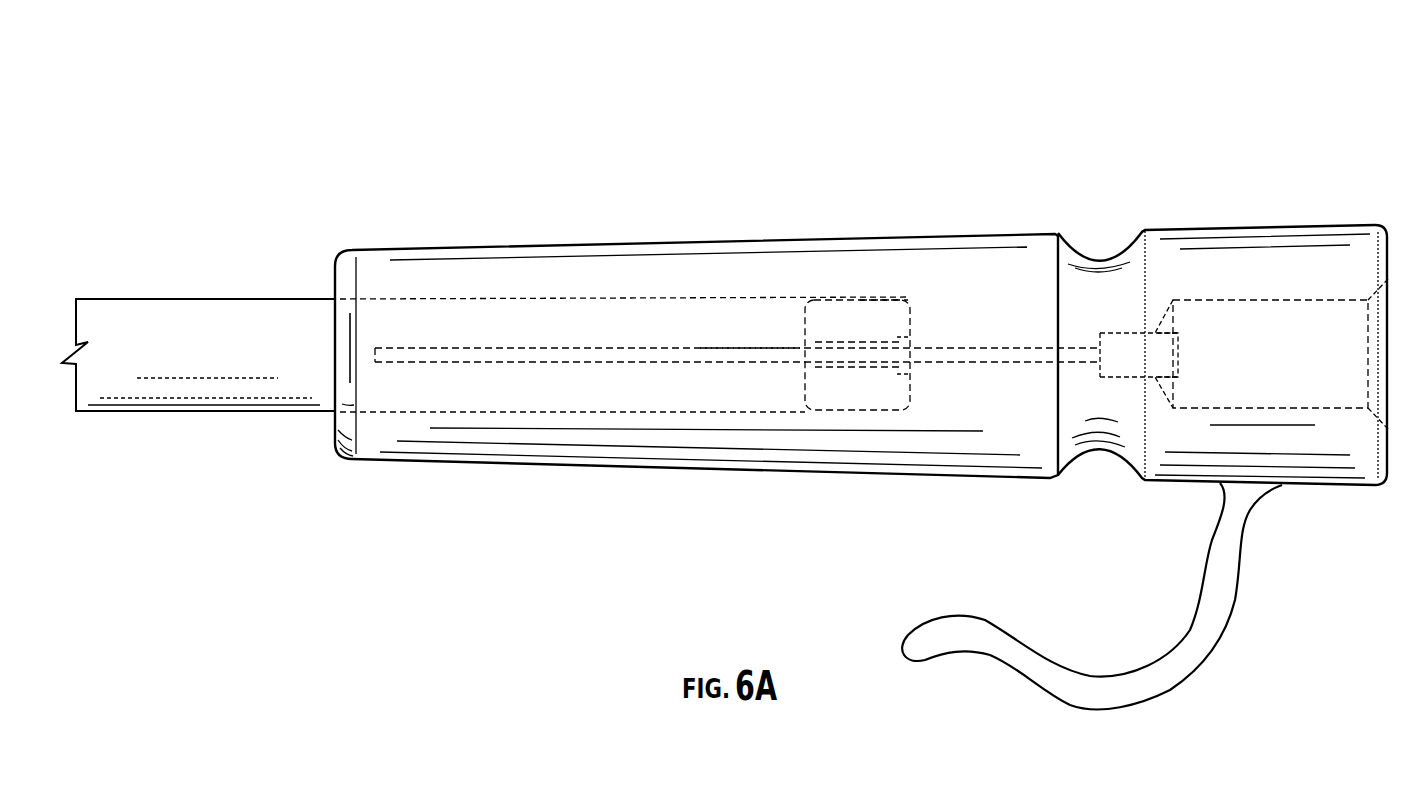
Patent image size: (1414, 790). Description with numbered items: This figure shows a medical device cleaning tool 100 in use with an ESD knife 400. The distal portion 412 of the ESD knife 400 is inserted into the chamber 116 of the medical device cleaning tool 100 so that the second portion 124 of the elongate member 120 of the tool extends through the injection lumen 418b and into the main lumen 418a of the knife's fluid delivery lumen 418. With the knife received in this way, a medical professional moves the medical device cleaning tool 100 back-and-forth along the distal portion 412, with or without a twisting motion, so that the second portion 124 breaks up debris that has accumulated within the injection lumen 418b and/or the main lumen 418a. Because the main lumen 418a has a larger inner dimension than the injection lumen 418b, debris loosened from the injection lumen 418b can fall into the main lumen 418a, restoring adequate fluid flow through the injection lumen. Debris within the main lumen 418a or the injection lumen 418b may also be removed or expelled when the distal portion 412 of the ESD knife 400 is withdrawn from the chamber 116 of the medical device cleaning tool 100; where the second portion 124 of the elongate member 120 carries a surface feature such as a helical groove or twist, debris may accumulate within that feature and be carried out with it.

The medical device cleaning tool 100 is at (1093, 225).
The chamber 116 is at (875, 318).
The elongate member 120 is at (1005, 358).
The second portion 124 is at (910, 297).
The ESD knife 400 is at (252, 422).
The distal portion 412 is at (805, 513).
The fluid delivery lumen 418 is at (538, 338).
The main lumen 418a is at (739, 338).
The injection lumen 418b is at (841, 336).